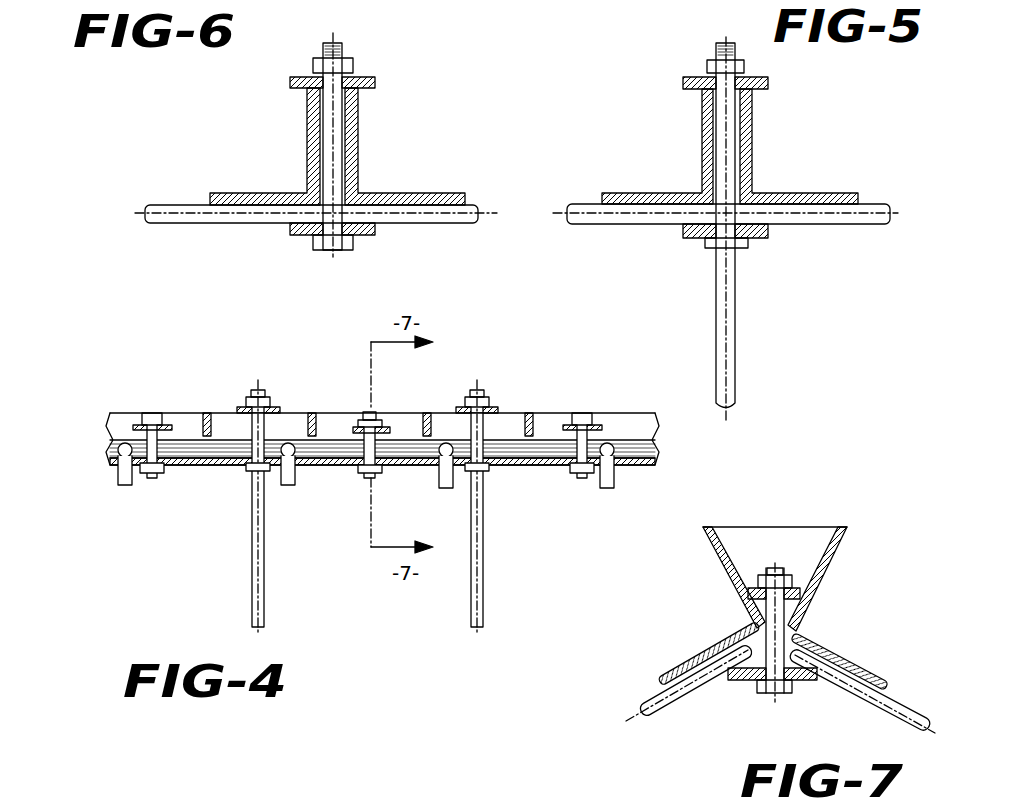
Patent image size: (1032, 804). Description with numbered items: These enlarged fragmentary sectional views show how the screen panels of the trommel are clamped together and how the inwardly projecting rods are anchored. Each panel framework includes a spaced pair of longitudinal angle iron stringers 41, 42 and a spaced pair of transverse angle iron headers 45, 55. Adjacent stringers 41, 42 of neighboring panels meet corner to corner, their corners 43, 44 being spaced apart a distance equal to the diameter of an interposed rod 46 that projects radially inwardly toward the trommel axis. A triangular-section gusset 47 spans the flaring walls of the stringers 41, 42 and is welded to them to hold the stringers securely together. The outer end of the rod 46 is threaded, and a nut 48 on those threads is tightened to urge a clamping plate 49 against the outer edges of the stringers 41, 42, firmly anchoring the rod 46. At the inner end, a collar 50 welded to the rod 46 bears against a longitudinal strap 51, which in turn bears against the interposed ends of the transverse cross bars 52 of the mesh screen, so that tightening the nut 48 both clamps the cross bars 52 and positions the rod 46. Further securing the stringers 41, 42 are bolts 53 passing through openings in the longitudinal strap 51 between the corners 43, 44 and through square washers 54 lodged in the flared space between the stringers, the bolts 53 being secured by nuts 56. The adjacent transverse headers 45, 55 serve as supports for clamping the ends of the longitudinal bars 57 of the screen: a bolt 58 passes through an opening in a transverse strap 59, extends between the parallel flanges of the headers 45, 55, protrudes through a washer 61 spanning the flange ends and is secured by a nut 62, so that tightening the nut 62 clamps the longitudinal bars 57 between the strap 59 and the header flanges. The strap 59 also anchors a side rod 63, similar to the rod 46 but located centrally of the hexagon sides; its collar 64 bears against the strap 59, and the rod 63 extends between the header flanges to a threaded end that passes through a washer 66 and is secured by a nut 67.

In FIG. 7, the longitudinal angle iron stringer 41 is at (850, 664).
In FIG. 4, the longitudinal angle iron stringer 42 is at (403, 434).
In FIG. 7, the longitudinal angle iron stringer 42 is at (702, 639).
In FIG. 7, the corner 43 is at (798, 623).
In FIG. 4, the corner 44 is at (652, 441).
In FIG. 7, the corner 44 is at (750, 625).
In FIG. 6, the transverse angle iron header 45 is at (357, 125).
In FIG. 5, the transverse angle iron header 45 is at (752, 150).
In FIG. 4, the rod 46 is at (252, 528).
In FIG. 4, the gusset 47 is at (308, 413).
In FIG. 4, the nut 48 is at (248, 400).
In FIG. 4, the clamping plate 49 is at (498, 411).
In FIG. 4, the collar 50 is at (485, 470).
In FIG. 4, the longitudinal strap 51 is at (550, 466).
In FIG. 7, the longitudinal strap 51 is at (736, 681).
In FIG. 4, the cross bar 52 is at (120, 472).
In FIG. 7, the cross bar 52 is at (648, 698).
In FIG. 4, the bolt 53 is at (152, 413).
In FIG. 7, the bolt 53 is at (778, 641).
In FIG. 4, the square washer 54 is at (360, 414).
In FIG. 7, the square washer 54 is at (760, 577).
In FIG. 6, the transverse angle iron header 55 is at (308, 133).
In FIG. 5, the transverse angle iron header 55 is at (703, 133).
In FIG. 4, the nut 56 is at (380, 420).
In FIG. 7, the nut 56 is at (790, 577).
In FIG. 6, the longitudinal bar 57 is at (186, 205).
In FIG. 5, the longitudinal bar 57 is at (592, 204).
In FIG. 6, the bolt 58 is at (336, 180).
In FIG. 6, the transverse strap 59 is at (291, 234).
In FIG. 5, the transverse strap 59 is at (684, 237).
In FIG. 6, the washer 61 is at (291, 82).
In FIG. 6, the nut 62 is at (320, 62).
In FIG. 5, the rod 63 is at (730, 310).
In FIG. 5, the collar 64 is at (712, 249).
In FIG. 5, the washer 66 is at (684, 83).
In FIG. 5, the nut 67 is at (710, 62).